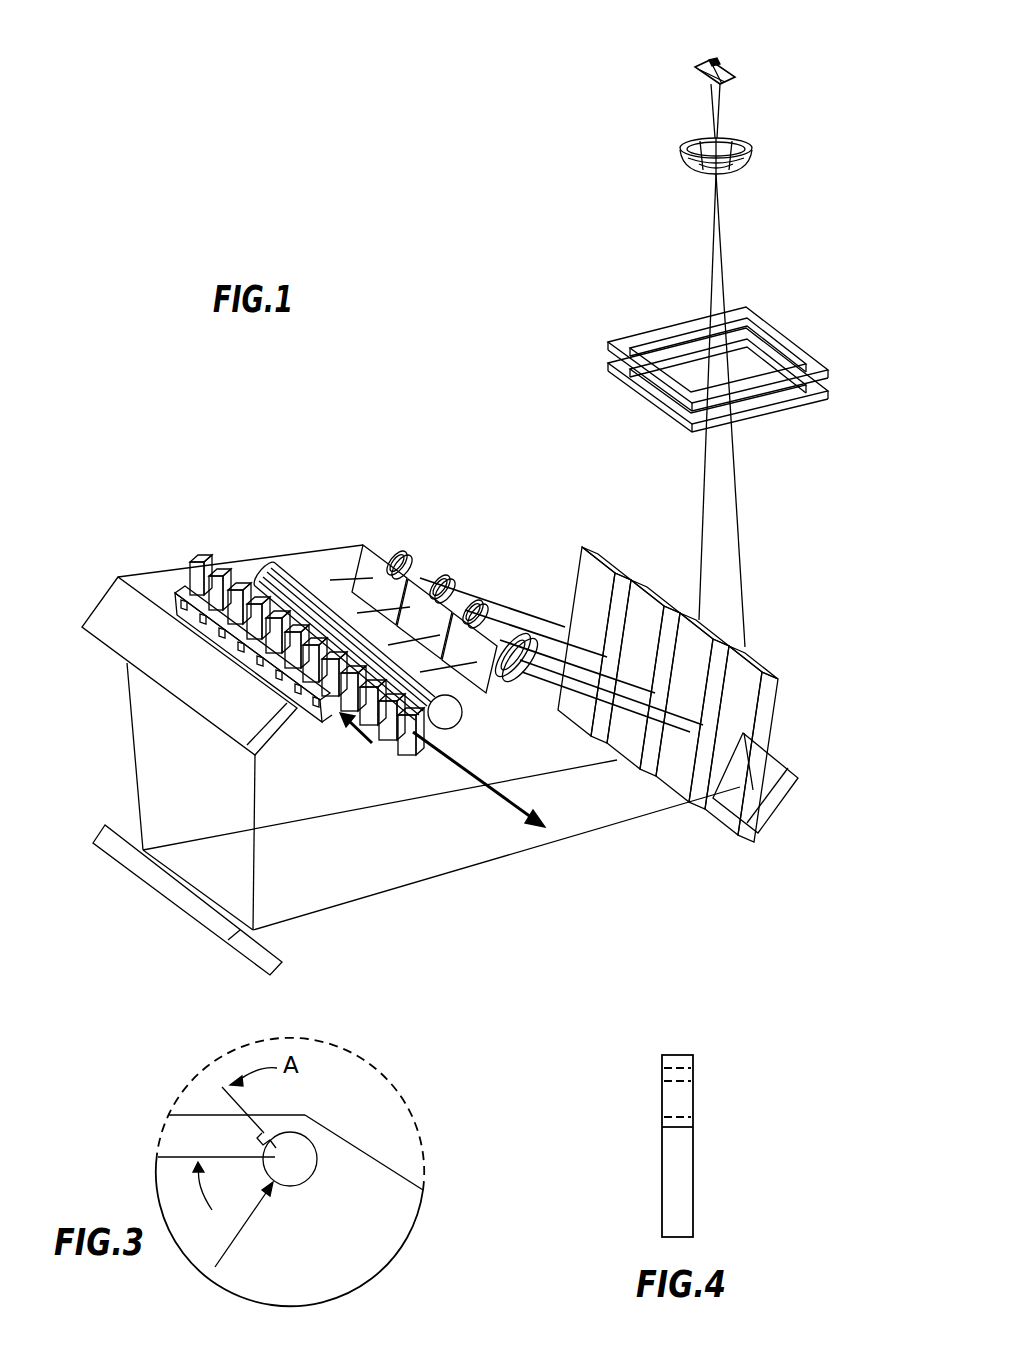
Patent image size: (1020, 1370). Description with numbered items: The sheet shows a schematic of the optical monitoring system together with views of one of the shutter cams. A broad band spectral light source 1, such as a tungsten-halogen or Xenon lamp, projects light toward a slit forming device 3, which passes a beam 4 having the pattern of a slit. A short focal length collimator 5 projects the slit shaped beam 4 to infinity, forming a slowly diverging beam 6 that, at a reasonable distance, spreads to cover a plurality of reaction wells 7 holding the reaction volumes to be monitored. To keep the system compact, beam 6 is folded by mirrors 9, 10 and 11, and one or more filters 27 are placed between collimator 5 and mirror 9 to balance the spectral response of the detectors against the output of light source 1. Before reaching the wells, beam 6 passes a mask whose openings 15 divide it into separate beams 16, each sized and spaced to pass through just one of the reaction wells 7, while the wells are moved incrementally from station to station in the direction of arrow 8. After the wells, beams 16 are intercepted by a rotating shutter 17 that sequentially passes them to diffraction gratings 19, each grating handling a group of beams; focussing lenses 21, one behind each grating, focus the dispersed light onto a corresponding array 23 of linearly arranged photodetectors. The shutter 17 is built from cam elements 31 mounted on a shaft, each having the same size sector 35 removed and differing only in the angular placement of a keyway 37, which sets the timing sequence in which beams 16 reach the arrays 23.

In FIG. 1, the broad band spectral light source 1 is at (722, 68).
In FIG. 1, the slit forming device 3 is at (738, 80).
In FIG. 1, the beam 4 is at (718, 118).
In FIG. 1, the short focal length collimator 5 is at (752, 150).
In FIG. 1, the slowly diverging beam 6 is at (745, 555).
In FIG. 1, the reaction wells 7 is at (188, 560).
In FIG. 1, the arrow 8 is at (487, 784).
In FIG. 1, the mirror 9 is at (770, 818).
In FIG. 1, the mirror 10 is at (258, 966).
In FIG. 1, the mirror 11 is at (110, 620).
In FIG. 1, the openings 15 is at (245, 658).
In FIG. 1, the separate beams 16 is at (363, 743).
In FIG. 1, the rotating shutter 17 is at (274, 570).
In FIG. 1, the diffraction gratings 19 is at (370, 572).
In FIG. 1, the focussing lenses 21 is at (485, 595).
In FIG. 1, the array of linearly arranged photodetectors 23 is at (594, 548).
In FIG. 1, the filters 27 is at (830, 376).
In FIG. 3, the cam elements 31 is at (426, 1194).
In FIG. 4, the cam elements 31 is at (700, 1141).
In FIG. 3, the sector 35 is at (393, 1087).
In FIG. 3, the keyway 37 is at (272, 1128).